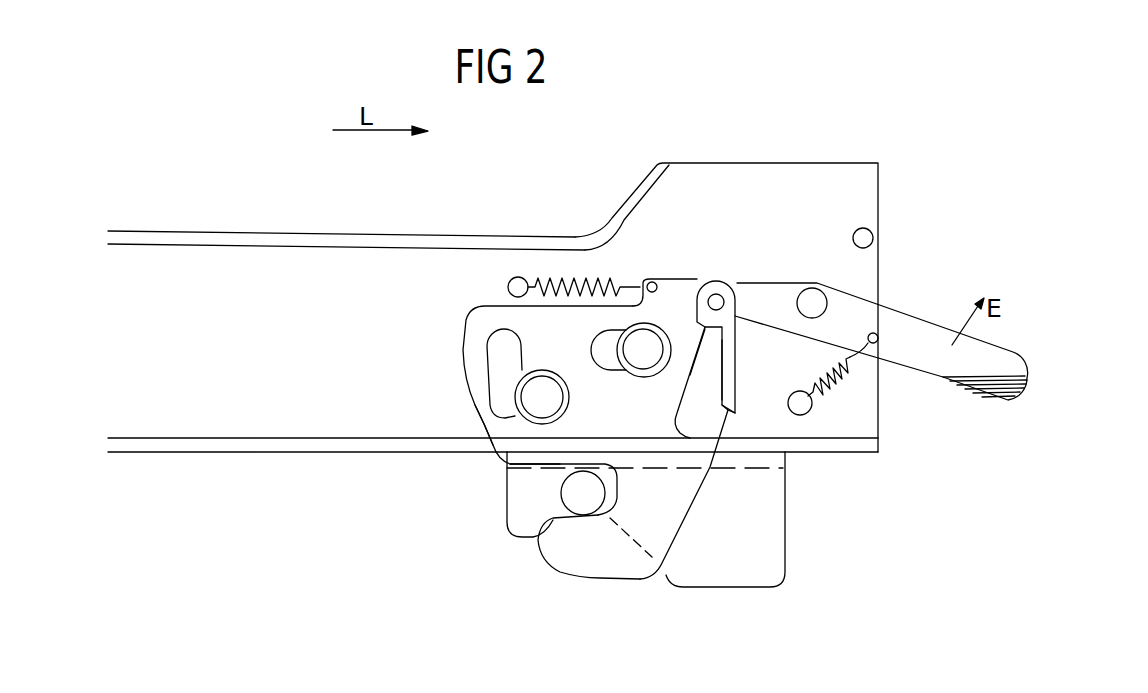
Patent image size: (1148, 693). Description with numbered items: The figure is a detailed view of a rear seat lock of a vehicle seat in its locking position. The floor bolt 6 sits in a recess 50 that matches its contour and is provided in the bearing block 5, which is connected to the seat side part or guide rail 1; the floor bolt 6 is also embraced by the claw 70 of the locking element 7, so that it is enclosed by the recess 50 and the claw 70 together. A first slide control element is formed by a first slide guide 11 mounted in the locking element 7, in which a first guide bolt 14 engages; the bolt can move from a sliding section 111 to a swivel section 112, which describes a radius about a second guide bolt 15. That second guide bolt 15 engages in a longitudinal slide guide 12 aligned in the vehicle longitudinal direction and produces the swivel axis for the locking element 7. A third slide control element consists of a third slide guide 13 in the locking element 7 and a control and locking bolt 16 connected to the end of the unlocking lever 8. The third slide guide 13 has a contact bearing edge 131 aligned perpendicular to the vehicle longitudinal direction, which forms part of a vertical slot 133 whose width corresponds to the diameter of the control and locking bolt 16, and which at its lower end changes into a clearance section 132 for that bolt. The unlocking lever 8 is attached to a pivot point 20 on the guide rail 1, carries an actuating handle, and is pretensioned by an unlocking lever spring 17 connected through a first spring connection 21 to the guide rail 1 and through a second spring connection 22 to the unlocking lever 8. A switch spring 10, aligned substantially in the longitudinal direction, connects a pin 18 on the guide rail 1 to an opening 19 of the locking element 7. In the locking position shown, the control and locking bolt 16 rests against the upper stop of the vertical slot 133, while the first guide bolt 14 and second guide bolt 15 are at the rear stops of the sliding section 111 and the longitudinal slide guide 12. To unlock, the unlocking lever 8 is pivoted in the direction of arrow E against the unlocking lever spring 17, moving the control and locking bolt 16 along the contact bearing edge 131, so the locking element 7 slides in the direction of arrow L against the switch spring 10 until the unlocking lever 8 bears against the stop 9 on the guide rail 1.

The guide rail 1 is at (263, 263).
The bearing block 5 is at (772, 547).
The floor bolt 6 is at (583, 503).
The locking element 7 is at (488, 415).
The unlocking lever 8 is at (932, 338).
The stop 9 is at (868, 238).
The switch spring 10 is at (573, 277).
The first slide guide 11 is at (483, 385).
The longitudinal slide guide 12 is at (610, 340).
The third slide guide 13 is at (735, 413).
The first guide bolt 14 is at (545, 392).
The second guide bolt 15 is at (647, 355).
The control and locking bolt 16 is at (718, 298).
The unlocking lever spring 17 is at (840, 387).
The pin 18 is at (513, 282).
The opening 19 is at (656, 283).
The pivot point 20 is at (805, 300).
The first spring connection 21 is at (803, 408).
The second spring connection 22 is at (877, 333).
The recess 50 is at (580, 470).
The claw 70 is at (617, 563).
The sliding section 111 is at (520, 417).
The swivel section 112 is at (495, 350).
The contact bearing edge 131 is at (725, 385).
The clearance section 132 is at (697, 423).
The vertical slot 133 is at (715, 353).